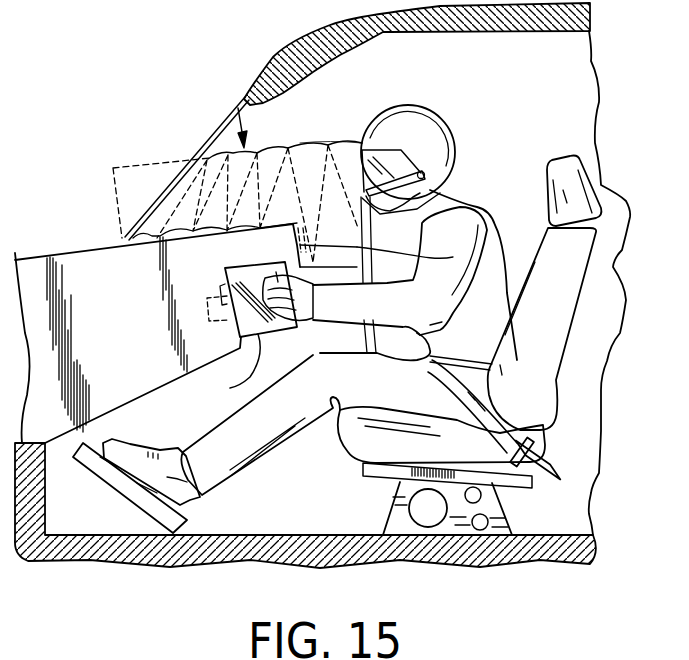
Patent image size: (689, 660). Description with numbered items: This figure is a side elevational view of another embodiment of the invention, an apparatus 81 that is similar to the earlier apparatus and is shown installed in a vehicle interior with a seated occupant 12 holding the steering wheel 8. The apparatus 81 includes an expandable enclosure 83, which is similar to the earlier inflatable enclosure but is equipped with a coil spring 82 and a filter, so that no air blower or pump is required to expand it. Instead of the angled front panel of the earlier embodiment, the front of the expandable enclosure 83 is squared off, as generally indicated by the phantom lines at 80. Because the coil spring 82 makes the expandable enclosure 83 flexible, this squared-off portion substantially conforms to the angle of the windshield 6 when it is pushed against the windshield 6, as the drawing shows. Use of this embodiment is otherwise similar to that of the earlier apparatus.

The windshield 6 is at (213, 133).
The steering wheel 8 is at (247, 375).
The occupant 12 is at (453, 257).
The phantom lines 80 is at (113, 192).
The apparatus 81 is at (233, 100).
The coil spring 82 is at (267, 157).
The expandable enclosure 83 is at (330, 143).